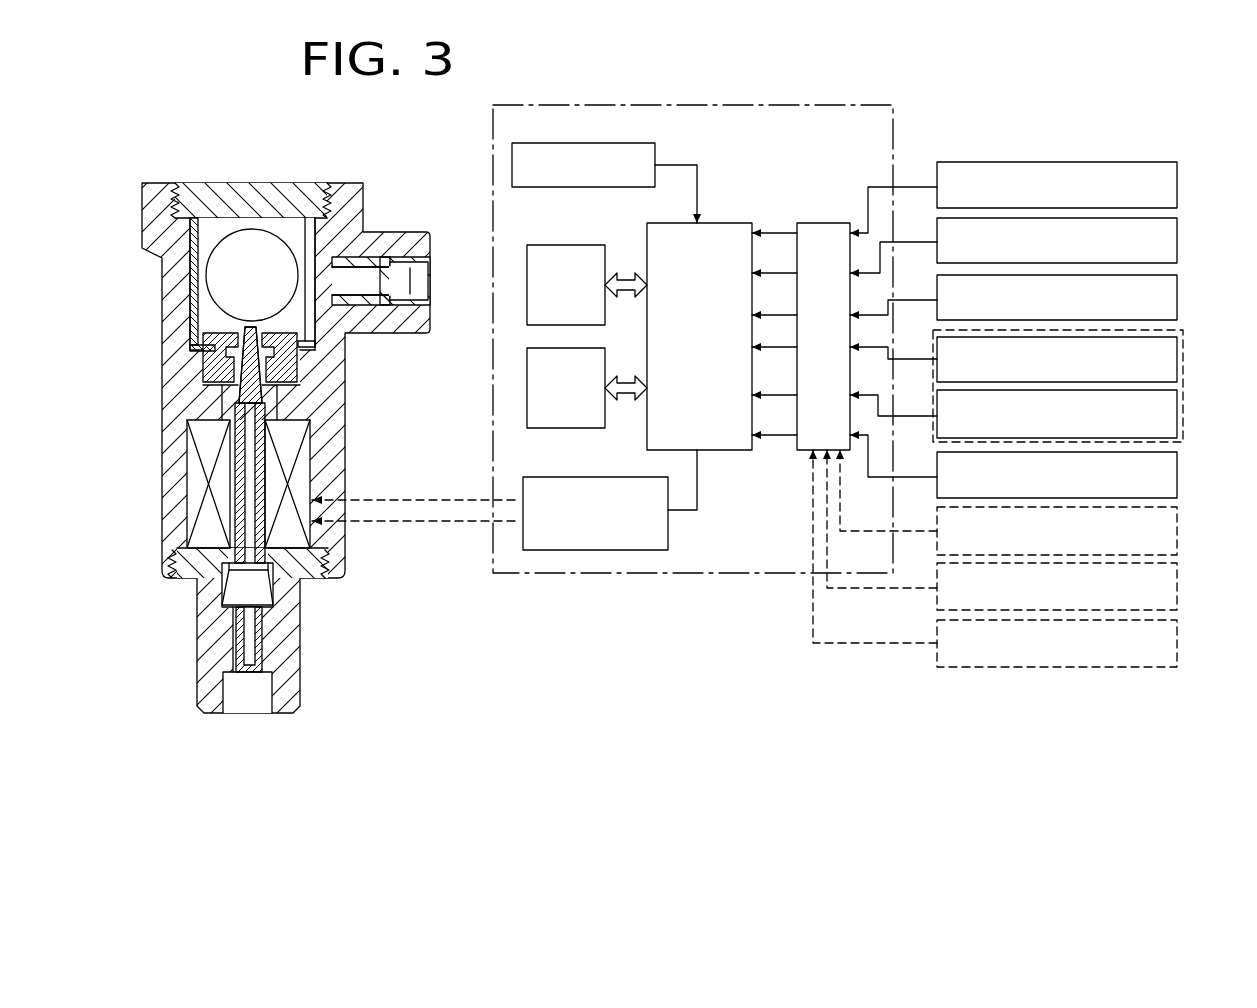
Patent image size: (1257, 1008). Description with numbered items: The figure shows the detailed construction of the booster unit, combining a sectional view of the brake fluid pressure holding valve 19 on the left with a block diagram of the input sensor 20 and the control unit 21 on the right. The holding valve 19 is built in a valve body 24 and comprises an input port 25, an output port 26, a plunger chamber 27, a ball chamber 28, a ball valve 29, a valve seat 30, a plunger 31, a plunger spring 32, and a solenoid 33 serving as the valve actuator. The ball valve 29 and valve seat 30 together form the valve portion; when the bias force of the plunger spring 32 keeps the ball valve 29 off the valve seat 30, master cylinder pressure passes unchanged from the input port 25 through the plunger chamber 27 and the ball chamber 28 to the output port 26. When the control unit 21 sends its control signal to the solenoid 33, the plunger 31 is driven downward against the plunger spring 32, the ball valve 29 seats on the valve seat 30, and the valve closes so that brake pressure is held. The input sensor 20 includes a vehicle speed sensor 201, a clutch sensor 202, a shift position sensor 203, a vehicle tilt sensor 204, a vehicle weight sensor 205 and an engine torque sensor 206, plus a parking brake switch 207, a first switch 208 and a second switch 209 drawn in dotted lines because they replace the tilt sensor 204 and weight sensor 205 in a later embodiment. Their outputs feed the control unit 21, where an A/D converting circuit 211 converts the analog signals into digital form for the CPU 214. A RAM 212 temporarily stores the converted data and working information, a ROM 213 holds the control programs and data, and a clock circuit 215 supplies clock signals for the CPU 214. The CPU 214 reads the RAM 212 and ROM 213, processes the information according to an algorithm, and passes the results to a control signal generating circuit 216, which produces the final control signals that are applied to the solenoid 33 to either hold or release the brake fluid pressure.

The brake fluid pressure holding valve 19 is at (195, 142).
The input sensor 20 is at (1021, 107).
The control unit 21 is at (712, 105).
The valve body 24 is at (142, 205).
The input port 25 is at (243, 703).
The output port 26 is at (413, 279).
The plunger chamber 27 is at (270, 397).
The ball chamber 28 is at (300, 233).
The ball valve 29 is at (217, 273).
The valve seat 30 is at (212, 324).
The plunger 31 is at (240, 392).
The plunger spring 32 is at (218, 578).
The solenoid 33 is at (303, 478).
The vehicle speed sensor 201 is at (1177, 193).
The clutch sensor 202 is at (1177, 247).
The shift position sensor 203 is at (1177, 302).
The vehicle tilt sensor 204 is at (1183, 362).
The vehicle weight sensor 205 is at (1183, 416).
The engine torque sensor 206 is at (1177, 480).
The parking brake switch 207 is at (1177, 535).
The first switch 208 is at (1177, 590).
The second switch 209 is at (1177, 647).
The A/D converting circuit 211 is at (836, 223).
The RAM 212 is at (571, 245).
The ROM 213 is at (562, 428).
The CPU 214 is at (720, 223).
The clock circuit 215 is at (602, 143).
The control signal generating circuit 216 is at (668, 531).